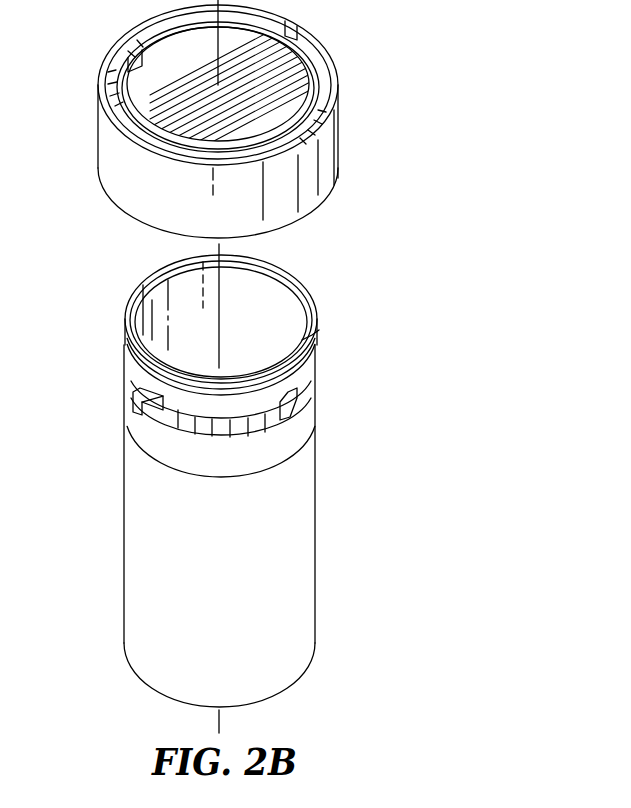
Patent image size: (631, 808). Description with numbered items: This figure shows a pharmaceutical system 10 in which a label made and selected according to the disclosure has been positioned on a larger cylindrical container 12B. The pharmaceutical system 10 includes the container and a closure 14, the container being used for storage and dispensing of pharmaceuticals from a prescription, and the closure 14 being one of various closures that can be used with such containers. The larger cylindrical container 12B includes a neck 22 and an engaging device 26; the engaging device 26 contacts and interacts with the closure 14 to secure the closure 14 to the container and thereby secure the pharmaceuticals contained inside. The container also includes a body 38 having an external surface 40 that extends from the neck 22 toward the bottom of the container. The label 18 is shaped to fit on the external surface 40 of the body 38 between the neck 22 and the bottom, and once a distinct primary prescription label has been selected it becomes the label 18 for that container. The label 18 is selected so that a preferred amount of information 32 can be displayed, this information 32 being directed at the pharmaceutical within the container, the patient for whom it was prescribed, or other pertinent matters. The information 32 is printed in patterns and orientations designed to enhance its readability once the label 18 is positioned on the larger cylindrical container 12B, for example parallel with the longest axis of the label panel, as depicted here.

The pharmaceutical system 10 is at (38, 176).
The closure 14 is at (339, 108).
The larger cylindrical container 12B is at (350, 536).
The neck 22 is at (103, 301).
The engaging device 26 is at (320, 331).
The body 38 is at (322, 403).
The label 18 is at (316, 491).
The external surface 40 is at (135, 649).
The information 32 is at (162, 514).